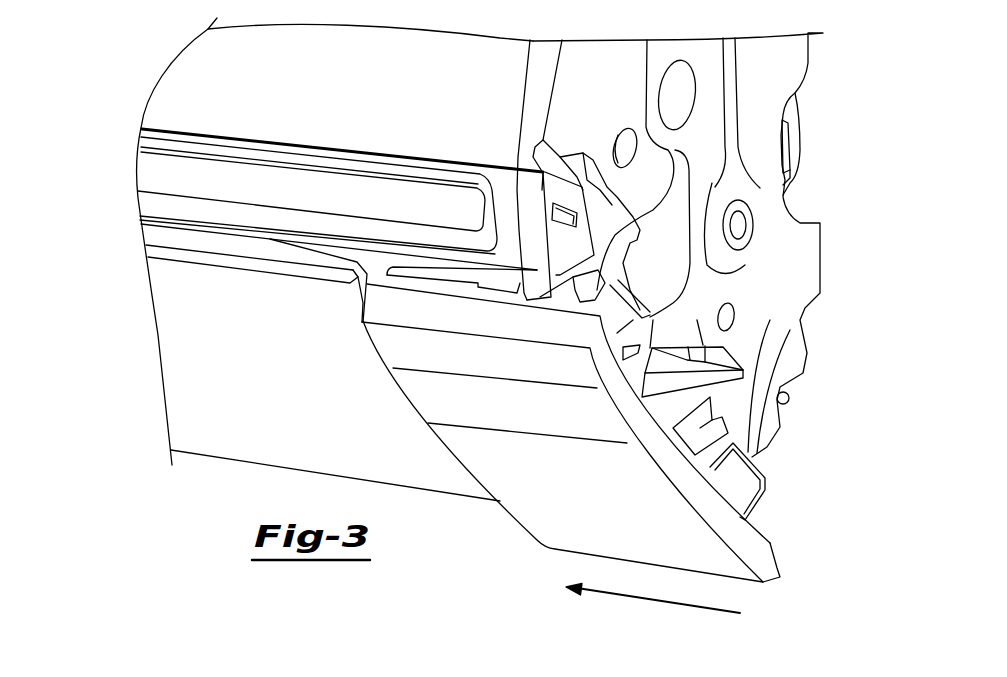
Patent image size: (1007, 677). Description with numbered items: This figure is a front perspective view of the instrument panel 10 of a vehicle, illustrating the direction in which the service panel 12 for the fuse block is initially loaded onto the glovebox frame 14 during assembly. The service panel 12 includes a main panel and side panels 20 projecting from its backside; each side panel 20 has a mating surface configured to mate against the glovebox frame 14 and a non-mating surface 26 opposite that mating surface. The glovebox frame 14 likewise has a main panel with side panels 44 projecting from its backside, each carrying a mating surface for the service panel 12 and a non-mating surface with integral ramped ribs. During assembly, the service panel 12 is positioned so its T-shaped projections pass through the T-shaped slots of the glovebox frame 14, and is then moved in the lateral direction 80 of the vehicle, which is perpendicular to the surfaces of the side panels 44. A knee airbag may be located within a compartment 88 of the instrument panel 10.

The instrument panel 10 is at (491, 315).
The service panel 12 is at (517, 490).
The glovebox frame 14 is at (740, 390).
The side panel 20 is at (617, 313).
The non-mating surface 26 is at (737, 481).
The side panel 44 is at (598, 262).
The lateral direction 80 is at (627, 597).
The compartment 88 is at (287, 410).